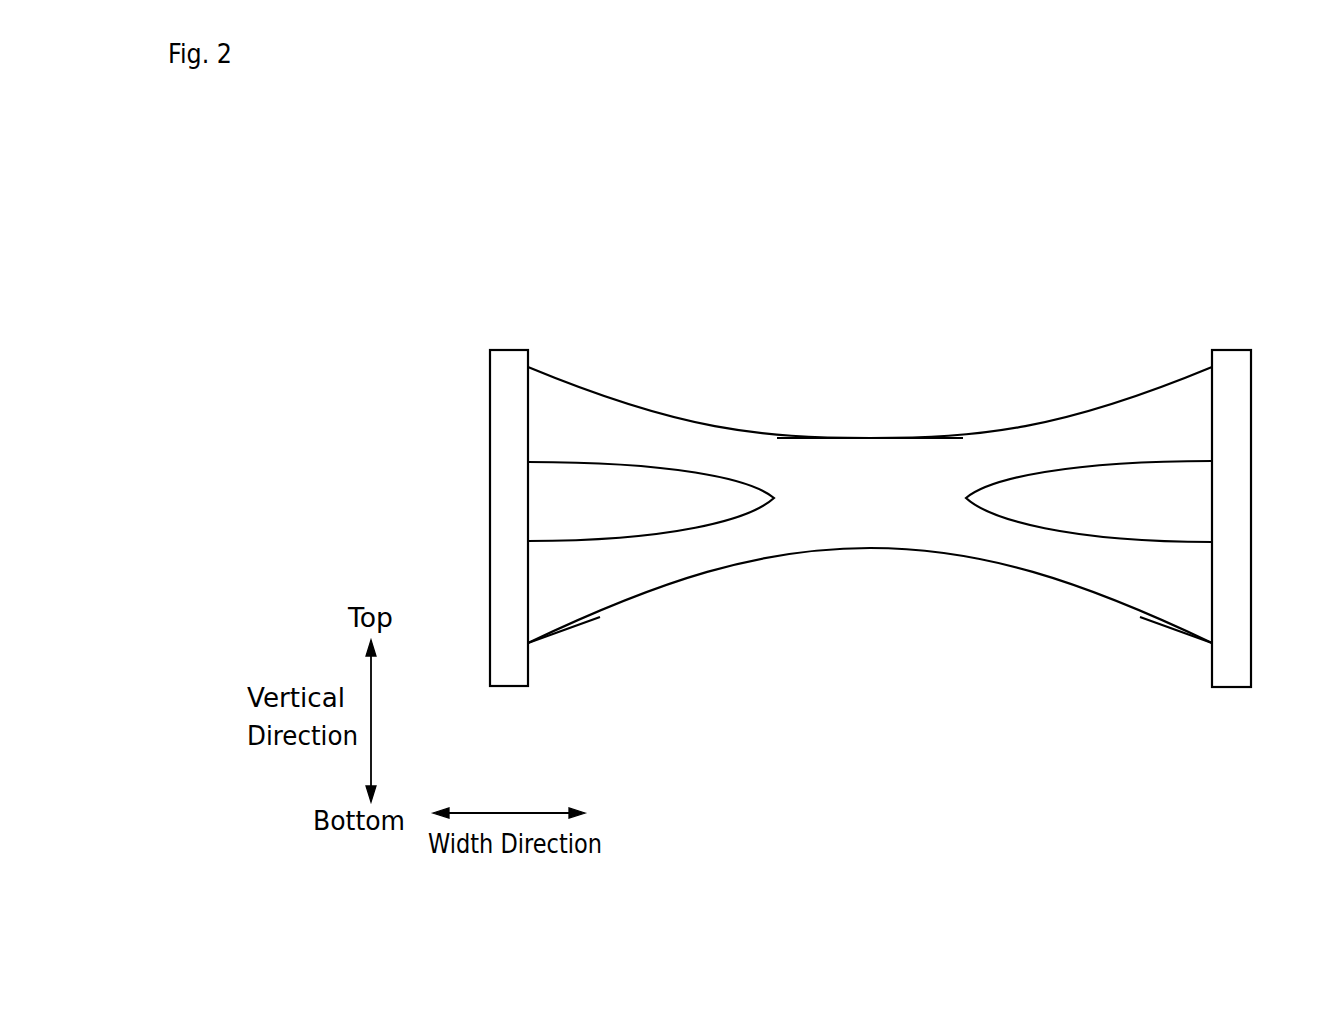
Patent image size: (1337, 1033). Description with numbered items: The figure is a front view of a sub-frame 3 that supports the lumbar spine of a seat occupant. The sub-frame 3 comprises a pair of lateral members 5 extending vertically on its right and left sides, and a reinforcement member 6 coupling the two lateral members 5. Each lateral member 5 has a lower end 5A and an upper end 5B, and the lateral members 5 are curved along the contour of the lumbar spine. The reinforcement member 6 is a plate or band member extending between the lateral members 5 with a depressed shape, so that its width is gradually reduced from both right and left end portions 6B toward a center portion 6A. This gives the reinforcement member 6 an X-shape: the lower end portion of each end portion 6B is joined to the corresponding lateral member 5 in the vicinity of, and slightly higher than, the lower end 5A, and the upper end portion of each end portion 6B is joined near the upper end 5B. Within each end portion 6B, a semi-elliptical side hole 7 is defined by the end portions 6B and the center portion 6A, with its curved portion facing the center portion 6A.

The sub-frame 3 is at (1179, 345).
The lateral member 5 is at (500, 464).
The lower end 5A is at (488, 683).
The upper end 5B is at (489, 363).
The reinforcement member 6 is at (955, 453).
The center portion 6A is at (877, 487).
The end portion 6B is at (542, 647).
The semi-elliptical side hole 7 is at (588, 485).